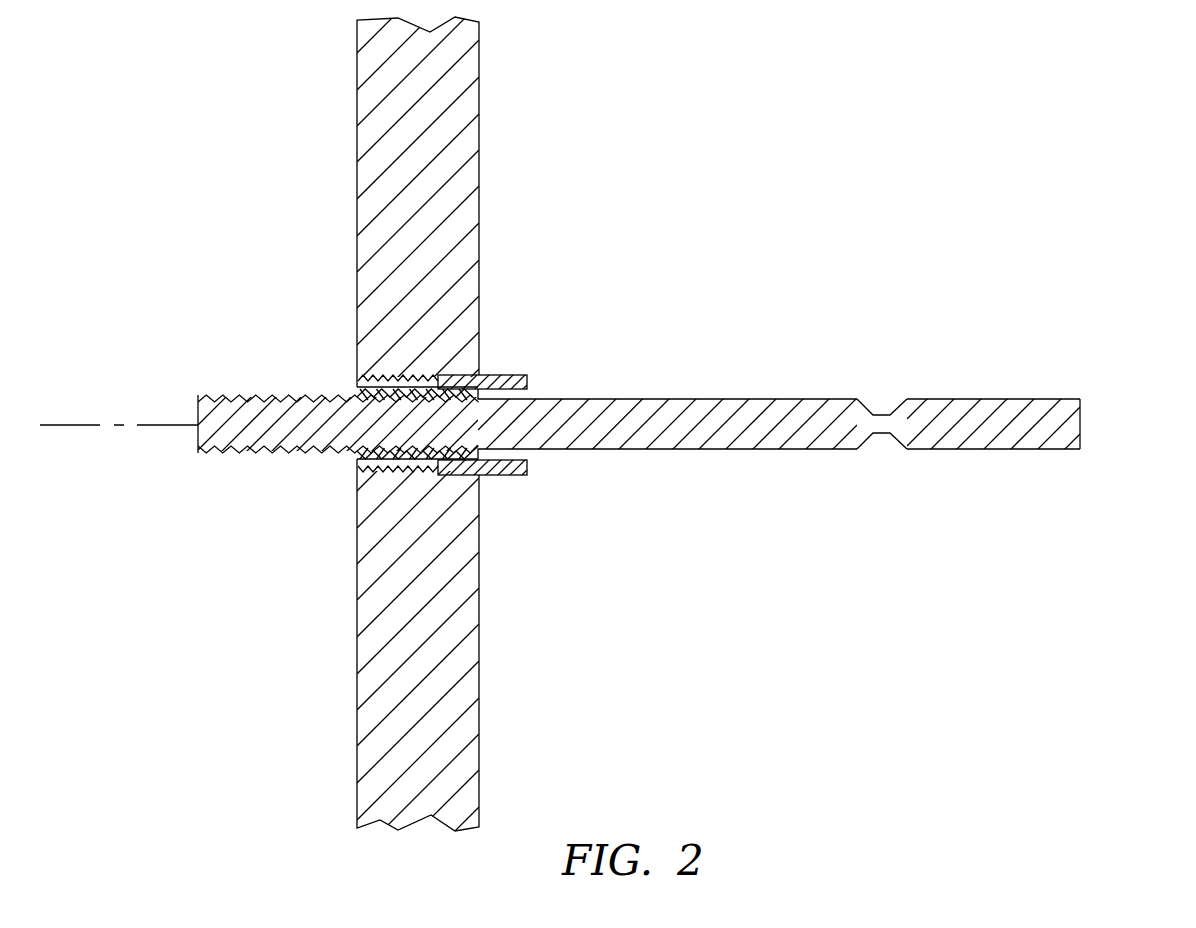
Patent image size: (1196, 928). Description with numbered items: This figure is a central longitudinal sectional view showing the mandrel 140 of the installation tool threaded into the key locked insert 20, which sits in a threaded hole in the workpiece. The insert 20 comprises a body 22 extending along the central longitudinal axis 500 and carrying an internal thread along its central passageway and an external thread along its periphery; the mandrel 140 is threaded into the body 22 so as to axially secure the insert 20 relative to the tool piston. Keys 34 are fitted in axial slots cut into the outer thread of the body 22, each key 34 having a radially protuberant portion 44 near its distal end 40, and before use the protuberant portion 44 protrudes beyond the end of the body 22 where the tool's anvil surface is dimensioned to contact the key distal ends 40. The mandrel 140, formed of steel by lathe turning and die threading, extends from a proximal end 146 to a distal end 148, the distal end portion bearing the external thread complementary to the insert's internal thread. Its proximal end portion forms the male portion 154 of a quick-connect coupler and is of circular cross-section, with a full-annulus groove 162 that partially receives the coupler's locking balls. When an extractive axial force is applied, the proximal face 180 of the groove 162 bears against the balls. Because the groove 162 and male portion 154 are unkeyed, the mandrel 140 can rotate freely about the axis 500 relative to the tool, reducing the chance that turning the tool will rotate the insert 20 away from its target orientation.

The key locked insert 20 is at (452, 368).
The body 22 is at (388, 462).
The keys 34 is at (509, 498).
The distal end 40 is at (527, 380).
The radially protuberant portion 44 is at (510, 376).
The mandrel 140 is at (716, 380).
The proximal end 146 is at (1082, 420).
The distal end 148 is at (197, 437).
The male portion 154 is at (998, 427).
The groove 162 is at (888, 390).
The proximal face 180 is at (895, 443).
The central longitudinal axis 500 is at (63, 425).